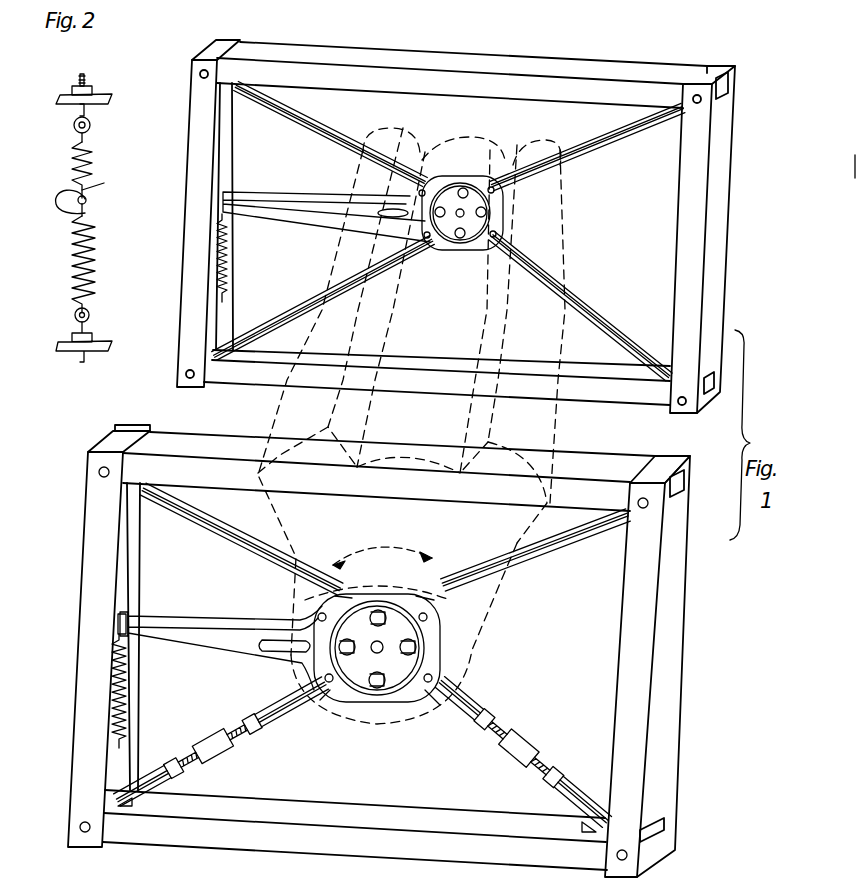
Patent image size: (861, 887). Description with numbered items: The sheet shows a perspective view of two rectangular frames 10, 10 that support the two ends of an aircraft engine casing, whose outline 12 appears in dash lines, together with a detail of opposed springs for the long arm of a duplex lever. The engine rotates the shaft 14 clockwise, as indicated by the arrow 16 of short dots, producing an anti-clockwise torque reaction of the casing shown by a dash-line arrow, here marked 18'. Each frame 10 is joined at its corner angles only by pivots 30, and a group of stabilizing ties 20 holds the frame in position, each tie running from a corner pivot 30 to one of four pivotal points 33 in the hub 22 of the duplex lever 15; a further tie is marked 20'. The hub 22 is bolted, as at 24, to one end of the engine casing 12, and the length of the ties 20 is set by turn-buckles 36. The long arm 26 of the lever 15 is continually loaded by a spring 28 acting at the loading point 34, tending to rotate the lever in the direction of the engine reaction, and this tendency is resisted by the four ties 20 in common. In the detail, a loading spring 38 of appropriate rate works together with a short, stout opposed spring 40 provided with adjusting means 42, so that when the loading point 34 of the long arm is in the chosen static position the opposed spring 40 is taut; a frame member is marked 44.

In FIG. 1, the rectangular frame 10 is at (693, 225).
In FIG. 1, the engine casing outline 12 is at (530, 428).
In FIG. 1, the shaft 14 is at (376, 660).
In FIG. 1, the duplex lever 15 is at (271, 641).
In FIG. 1, the arrow 16 is at (396, 546).
In FIG. 1, the rotated position of hub 18' is at (382, 539).
In FIG. 1, the stabilizing tie 20 is at (399, 457).
In FIG. 1, the diagonal brace 20' is at (312, 880).
In FIG. 1, the hub 22 is at (390, 590).
In FIG. 1, the bolt 24 is at (405, 654).
In FIG. 2, the long arm 26 is at (93, 205).
In FIG. 1, the long arm 26 is at (197, 640).
In FIG. 1, the spring 28 is at (122, 702).
In FIG. 1, the corner pivot 30 is at (100, 474).
In FIG. 1, the pivotal point 33 is at (318, 616).
In FIG. 2, the loading point 34 is at (78, 201).
In FIG. 1, the loading point 34 is at (122, 622).
In FIG. 1, the turn-buckle 36 is at (216, 745).
In FIG. 2, the loading spring 38 is at (74, 262).
In FIG. 2, the opposed spring 40 is at (72, 165).
In FIG. 2, the adjusting means 42 is at (72, 92).
In FIG. 1, the frame member 44 is at (472, 882).